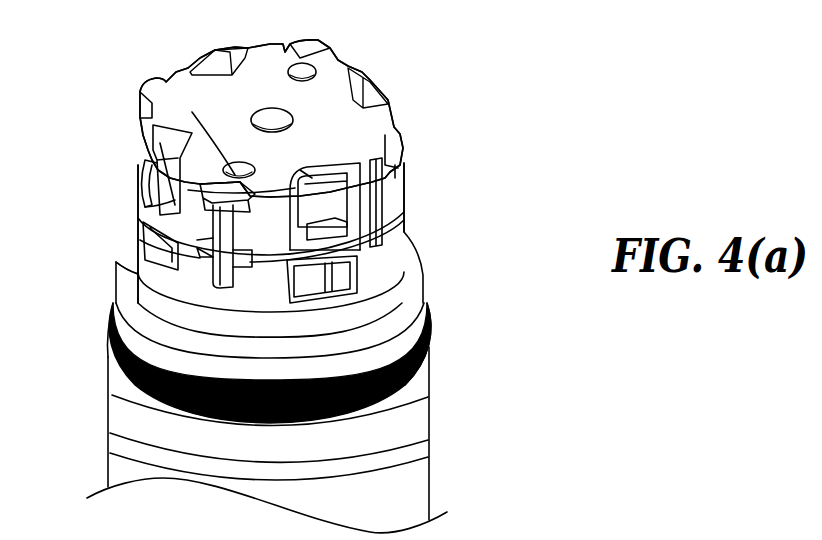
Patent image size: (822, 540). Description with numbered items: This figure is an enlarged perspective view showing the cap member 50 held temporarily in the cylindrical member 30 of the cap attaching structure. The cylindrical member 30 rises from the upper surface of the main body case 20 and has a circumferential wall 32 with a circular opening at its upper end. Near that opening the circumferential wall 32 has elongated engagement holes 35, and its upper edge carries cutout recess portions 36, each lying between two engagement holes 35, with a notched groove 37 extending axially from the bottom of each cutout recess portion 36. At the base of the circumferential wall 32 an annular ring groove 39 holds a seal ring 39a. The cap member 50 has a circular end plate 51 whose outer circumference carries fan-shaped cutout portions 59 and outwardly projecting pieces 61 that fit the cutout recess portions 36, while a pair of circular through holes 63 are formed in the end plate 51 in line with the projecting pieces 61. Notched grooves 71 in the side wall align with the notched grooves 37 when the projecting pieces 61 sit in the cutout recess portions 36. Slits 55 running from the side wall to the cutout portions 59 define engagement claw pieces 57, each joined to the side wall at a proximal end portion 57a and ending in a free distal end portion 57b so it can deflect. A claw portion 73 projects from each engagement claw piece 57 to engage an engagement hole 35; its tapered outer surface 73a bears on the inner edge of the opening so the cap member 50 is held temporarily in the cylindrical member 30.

The main body case 20 is at (442, 460).
The cylindrical member 30 is at (423, 243).
The circumferential wall 32 is at (390, 263).
The engagement hole 35 is at (157, 255).
The cutout recess portion 36 is at (225, 269).
The notched groove 37 is at (112, 305).
The annular ring groove 39 is at (398, 384).
The seal ring 39a is at (428, 333).
The cap member 50 is at (402, 82).
The end plate 51 is at (355, 67).
The slit 55 is at (228, 258).
The engagement claw piece 57 is at (153, 153).
The proximal end portion 57a is at (300, 255).
The distal end portion 57b is at (317, 177).
The cutout portion 59 is at (188, 138).
The projecting piece 61 is at (318, 45).
The circular through hole 63 is at (288, 58).
The notched groove 71 is at (145, 243).
The claw portion 73 is at (142, 178).
The outer surface 73a is at (150, 199).